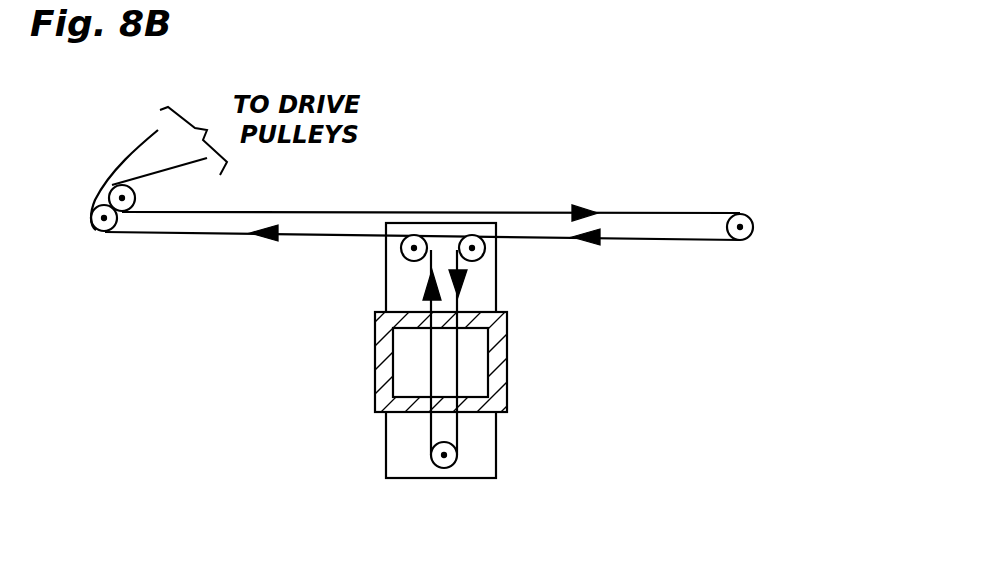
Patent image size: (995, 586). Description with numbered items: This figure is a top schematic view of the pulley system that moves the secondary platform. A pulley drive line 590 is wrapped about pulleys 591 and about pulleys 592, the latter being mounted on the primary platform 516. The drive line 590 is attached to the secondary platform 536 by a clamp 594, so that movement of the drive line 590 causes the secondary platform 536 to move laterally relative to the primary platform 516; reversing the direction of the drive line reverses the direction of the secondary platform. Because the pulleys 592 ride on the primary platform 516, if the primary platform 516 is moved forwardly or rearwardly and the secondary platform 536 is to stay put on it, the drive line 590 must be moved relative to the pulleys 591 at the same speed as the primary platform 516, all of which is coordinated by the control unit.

The pulley drive line 590 is at (653, 212).
The pulleys 591 is at (124, 213).
The pulleys 592 is at (459, 252).
The primary platform 516 is at (496, 272).
The secondary platform 536 is at (507, 383).
The clamp 594 is at (457, 320).